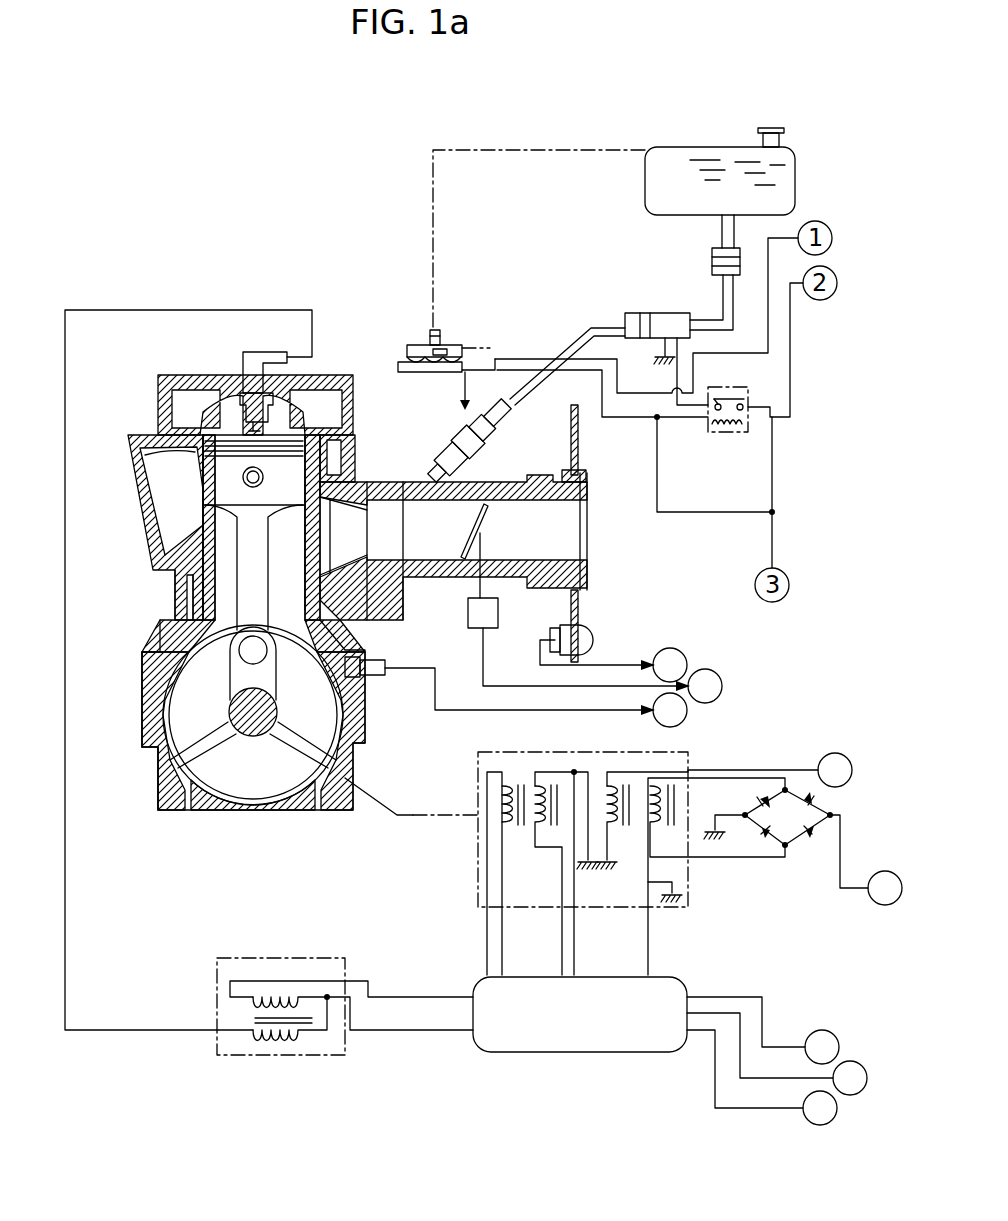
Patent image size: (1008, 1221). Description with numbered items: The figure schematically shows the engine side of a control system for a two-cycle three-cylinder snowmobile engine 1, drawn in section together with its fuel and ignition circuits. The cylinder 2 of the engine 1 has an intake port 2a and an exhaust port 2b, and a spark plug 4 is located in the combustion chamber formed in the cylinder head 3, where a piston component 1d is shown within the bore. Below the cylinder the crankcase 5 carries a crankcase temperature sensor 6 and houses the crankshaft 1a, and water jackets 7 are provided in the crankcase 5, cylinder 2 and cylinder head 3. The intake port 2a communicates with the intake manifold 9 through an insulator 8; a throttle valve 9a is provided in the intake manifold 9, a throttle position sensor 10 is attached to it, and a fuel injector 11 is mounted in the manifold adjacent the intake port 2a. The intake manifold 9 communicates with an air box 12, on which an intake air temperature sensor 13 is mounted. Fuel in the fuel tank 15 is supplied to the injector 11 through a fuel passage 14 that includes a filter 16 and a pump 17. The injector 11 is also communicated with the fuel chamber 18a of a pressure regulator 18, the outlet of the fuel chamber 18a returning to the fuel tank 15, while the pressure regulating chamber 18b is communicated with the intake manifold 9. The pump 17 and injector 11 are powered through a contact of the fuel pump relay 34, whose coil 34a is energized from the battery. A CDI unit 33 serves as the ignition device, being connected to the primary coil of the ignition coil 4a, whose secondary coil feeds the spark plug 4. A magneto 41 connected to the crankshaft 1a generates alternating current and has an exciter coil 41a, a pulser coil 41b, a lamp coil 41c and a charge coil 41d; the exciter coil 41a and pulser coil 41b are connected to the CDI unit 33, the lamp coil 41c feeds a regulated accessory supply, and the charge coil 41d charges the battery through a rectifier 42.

The engine 1 is at (135, 778).
The crankshaft 1a is at (262, 722).
The piston 1d is at (203, 425).
The cylinder 2 is at (175, 580).
The intake port 2a is at (338, 578).
The exhaust port 2b is at (150, 520).
The cylinder head 3 is at (157, 392).
The spark plug 4 is at (243, 362).
The ignition coil 4a is at (297, 958).
The crankcase 5 is at (142, 680).
The crankcase temperature sensor 6 is at (372, 677).
The water jackets 7 is at (155, 458).
The insulator 8 is at (387, 578).
The intake manifold 9 is at (453, 580).
The throttle valve 9a is at (490, 512).
The throttle position sensor 10 is at (498, 612).
The fuel injector 11 is at (452, 448).
The air box 12 is at (578, 440).
The intake air temperature sensor 13 is at (588, 633).
The fuel passage 14 is at (568, 332).
The fuel tank 15 is at (645, 200).
The filter 16 is at (712, 262).
The pump 17 is at (640, 313).
The pressure regulator 18 is at (418, 327).
The fuel chamber 18a is at (442, 345).
The pressure regulating chamber 18b is at (425, 368).
The CDI unit 33 is at (645, 1053).
The fuel pump relay 34 is at (720, 432).
The coil 34a is at (742, 432).
The magneto 41 is at (478, 768).
The exciter coil 41a is at (502, 802).
The pulser coil 41b is at (537, 768).
The lamp coil 41c is at (600, 768).
The charge coil 41d is at (650, 785).
The rectifier 42 is at (817, 836).